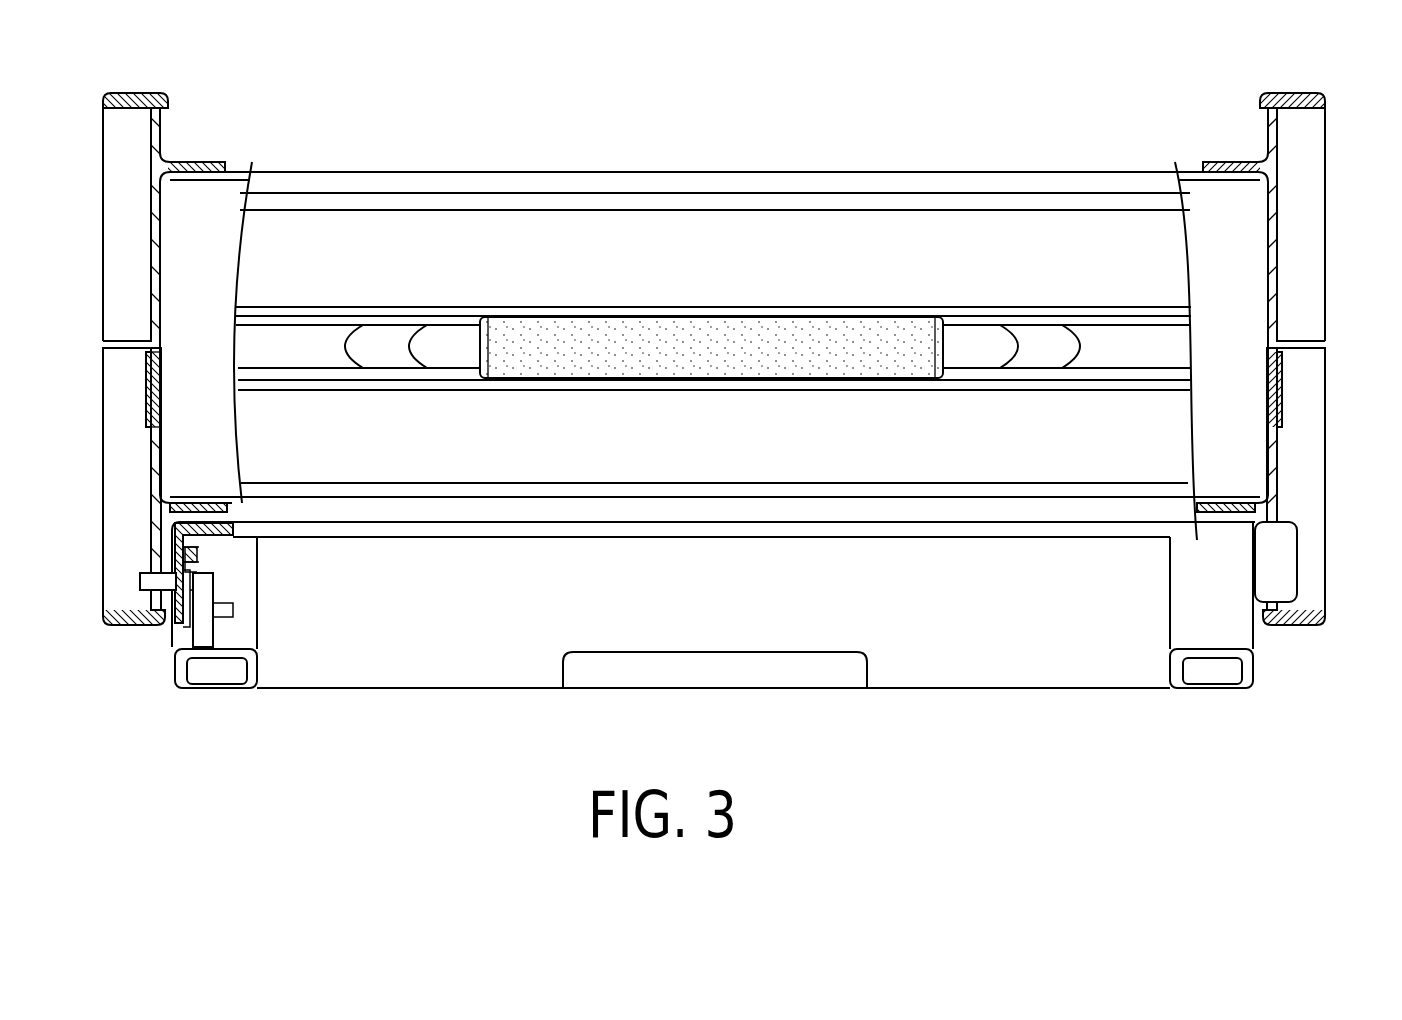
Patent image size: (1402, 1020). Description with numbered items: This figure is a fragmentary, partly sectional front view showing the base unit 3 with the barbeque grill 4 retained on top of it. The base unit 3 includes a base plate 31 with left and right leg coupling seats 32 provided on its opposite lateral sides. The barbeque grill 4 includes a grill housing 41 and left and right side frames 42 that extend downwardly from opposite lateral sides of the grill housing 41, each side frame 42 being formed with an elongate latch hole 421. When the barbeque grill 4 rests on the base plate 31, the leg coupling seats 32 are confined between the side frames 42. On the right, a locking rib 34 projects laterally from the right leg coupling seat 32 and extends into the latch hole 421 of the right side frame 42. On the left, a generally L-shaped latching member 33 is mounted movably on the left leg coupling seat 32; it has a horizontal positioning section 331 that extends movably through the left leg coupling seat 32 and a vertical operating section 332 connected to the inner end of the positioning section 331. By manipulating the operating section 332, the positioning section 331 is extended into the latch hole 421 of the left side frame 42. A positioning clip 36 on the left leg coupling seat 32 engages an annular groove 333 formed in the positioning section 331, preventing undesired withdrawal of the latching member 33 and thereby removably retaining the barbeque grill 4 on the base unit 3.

The base unit 3 is at (1022, 697).
The base plate 31 is at (695, 530).
The leg coupling seats 32 is at (240, 652).
The latching member 33 is at (242, 643).
The horizontal positioning section 331 is at (167, 585).
The vertical operating section 332 is at (202, 632).
The annular groove 333 is at (243, 610).
The locking rib 34 is at (1283, 550).
The positioning clip 36 is at (197, 568).
The barbeque grill 4 is at (585, 160).
The grill housing 41 is at (505, 240).
The side frames 42 is at (130, 622).
The latch hole 421 is at (160, 548).